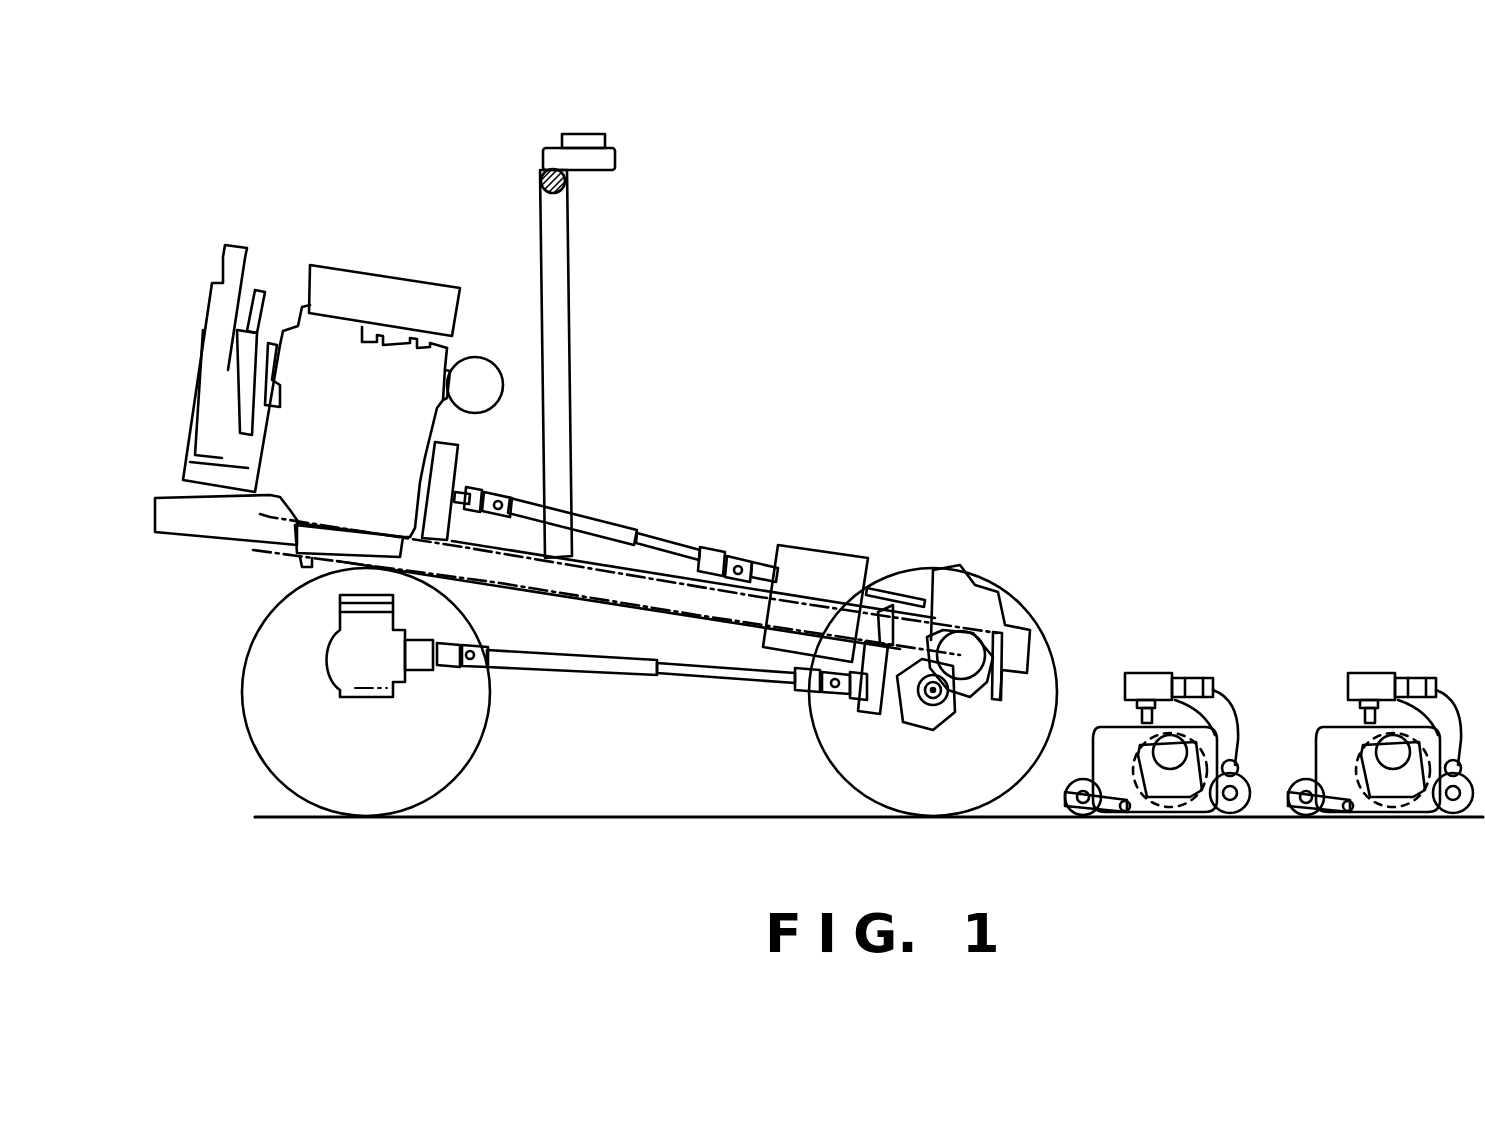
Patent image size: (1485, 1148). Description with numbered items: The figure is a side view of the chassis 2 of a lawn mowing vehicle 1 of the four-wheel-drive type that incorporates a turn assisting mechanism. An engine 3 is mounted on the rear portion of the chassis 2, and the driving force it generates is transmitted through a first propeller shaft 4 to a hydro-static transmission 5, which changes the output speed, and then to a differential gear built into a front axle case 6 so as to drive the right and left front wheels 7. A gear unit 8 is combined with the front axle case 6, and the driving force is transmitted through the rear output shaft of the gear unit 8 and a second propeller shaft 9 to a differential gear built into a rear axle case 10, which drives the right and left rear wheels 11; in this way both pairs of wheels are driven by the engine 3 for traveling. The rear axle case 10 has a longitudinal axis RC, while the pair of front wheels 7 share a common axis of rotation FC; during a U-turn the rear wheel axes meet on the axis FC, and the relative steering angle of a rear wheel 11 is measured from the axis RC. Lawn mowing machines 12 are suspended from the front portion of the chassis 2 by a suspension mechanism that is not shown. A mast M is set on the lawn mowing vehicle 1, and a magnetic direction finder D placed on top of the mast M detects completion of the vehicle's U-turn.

The lawn mowing vehicle 1 is at (1008, 296).
The chassis 2 is at (678, 607).
The engine 3 is at (398, 255).
The first propeller shaft 4 is at (625, 535).
The hydro-static transmission 5 is at (815, 555).
The front axle case 6 is at (1017, 627).
The front wheels 7 is at (900, 570).
The gear unit 8 is at (890, 710).
The second propeller shaft 9 is at (605, 668).
The rear axle case 10 is at (345, 675).
The rear wheels 11 is at (487, 673).
The lawn mowing machines 12 is at (1185, 663).
The magnetic direction finder D is at (600, 140).
The mast M is at (563, 318).
The longitudinal axis of the rear axle case RC is at (372, 690).
The common axis of rotation of the front wheels FC is at (945, 700).